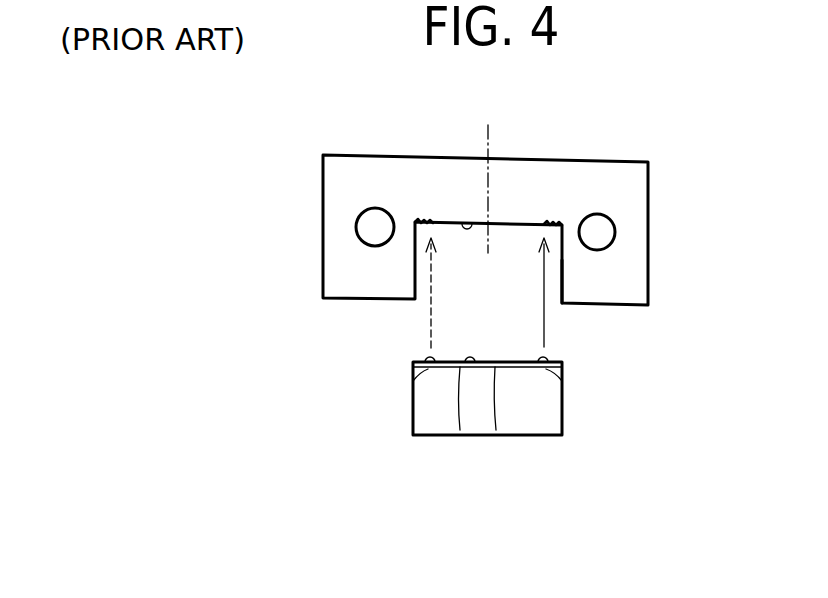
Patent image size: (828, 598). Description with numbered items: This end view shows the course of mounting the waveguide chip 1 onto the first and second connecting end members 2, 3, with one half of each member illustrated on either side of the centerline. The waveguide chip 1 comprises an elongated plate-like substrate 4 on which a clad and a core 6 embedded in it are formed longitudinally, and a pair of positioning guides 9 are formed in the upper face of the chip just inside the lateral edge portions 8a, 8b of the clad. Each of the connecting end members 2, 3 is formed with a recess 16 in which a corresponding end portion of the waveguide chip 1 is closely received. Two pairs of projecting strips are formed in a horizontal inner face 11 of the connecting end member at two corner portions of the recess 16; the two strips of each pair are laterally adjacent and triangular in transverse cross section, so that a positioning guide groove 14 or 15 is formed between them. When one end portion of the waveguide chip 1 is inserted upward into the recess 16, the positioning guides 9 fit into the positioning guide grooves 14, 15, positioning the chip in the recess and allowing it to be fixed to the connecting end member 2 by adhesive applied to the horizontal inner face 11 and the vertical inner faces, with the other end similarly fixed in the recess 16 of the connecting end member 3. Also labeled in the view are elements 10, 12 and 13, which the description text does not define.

The waveguide chip 1 is at (482, 432).
The first connecting end member 2 is at (358, 154).
The second connecting end member 3 is at (615, 153).
The substrate 4 is at (536, 443).
The core 6 is at (492, 440).
The lateral edge portion 8a is at (562, 362).
The lateral edge portion 8b is at (413, 362).
The positioning guide 9 is at (413, 381).
The slit 10 is at (455, 440).
The horizontal inner face 11 is at (467, 211).
The right mounting hole 12 is at (615, 228).
The left mounting hole 13 is at (356, 226).
The positioning guide groove 14 is at (424, 217).
The positioning guide groove 15 is at (553, 217).
The recess 16 is at (508, 283).